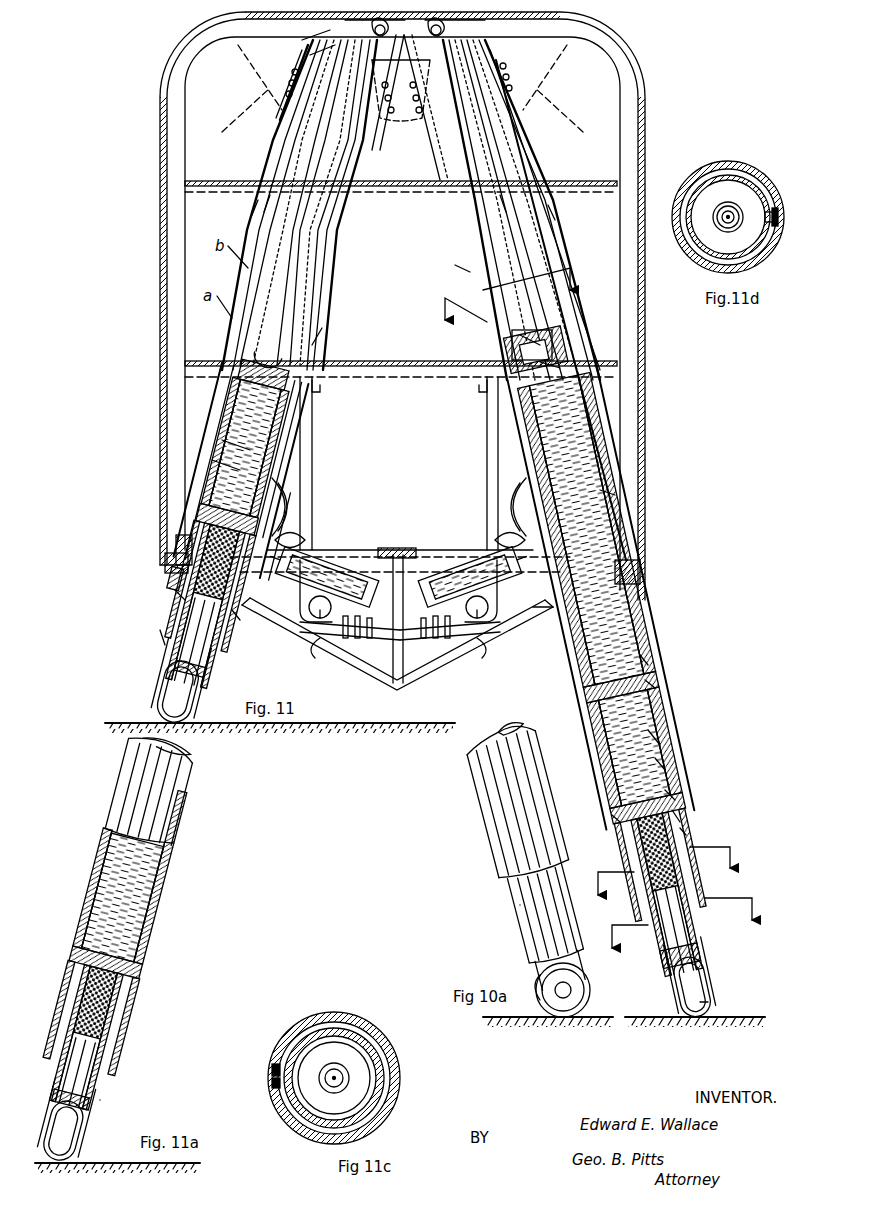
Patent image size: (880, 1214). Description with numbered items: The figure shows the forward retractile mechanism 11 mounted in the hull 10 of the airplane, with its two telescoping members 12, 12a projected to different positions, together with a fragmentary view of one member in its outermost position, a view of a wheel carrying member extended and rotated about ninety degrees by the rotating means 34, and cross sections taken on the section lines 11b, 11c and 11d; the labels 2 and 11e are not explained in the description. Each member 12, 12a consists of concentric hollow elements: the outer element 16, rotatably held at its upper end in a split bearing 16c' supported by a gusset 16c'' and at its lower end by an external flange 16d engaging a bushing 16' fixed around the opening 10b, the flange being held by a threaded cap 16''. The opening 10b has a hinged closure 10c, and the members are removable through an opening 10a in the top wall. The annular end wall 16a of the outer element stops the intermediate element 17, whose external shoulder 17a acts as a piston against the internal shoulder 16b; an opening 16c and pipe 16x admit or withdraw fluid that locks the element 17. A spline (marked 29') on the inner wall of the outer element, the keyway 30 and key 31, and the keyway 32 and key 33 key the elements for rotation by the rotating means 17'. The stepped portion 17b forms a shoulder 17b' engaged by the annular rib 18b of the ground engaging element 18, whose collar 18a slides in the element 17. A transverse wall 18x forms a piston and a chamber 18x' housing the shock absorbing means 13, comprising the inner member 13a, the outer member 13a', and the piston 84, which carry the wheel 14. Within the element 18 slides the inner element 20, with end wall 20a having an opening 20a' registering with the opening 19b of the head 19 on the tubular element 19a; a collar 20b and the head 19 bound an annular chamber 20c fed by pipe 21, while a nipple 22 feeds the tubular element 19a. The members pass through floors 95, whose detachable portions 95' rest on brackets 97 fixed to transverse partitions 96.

In FIG. 11, the body frame 2 is at (640, 300).
In FIG. 11, the hull 10 is at (470, 652).
In FIG. 11, the opening in top wall of hull 10a is at (175, 590).
In FIG. 11, the opening 10b is at (232, 610).
In FIG. 11, the hinged closure 10c is at (160, 630).
In FIG. 11, the retractile mechanism 11 is at (420, 543).
In FIG. 11, the section line 11b— 11b is at (522, 306).
In FIG. 11, the section line 11c— 11c is at (677, 884).
In FIG. 11, the section line 11d— 11d is at (691, 935).
In FIG. 11, the section line / actuator 11e is at (163, 462).
In FIG. 11, the retractile member 12 is at (360, 271).
In FIG. 11, the retractile member 12a is at (455, 269).
In FIG. 11, the shock-absorbing means 13 is at (718, 886).
In FIG. 11A, the shock-absorbing means 13 is at (142, 1069).
In FIG. 11D, the shock-absorbing means 13 is at (756, 241).
In FIG. 11C, the inner hollow member 13a is at (356, 1054).
In FIG. 11D, the inner hollow member 13a is at (728, 192).
In FIG. 11D, the hollow outer member 13a' is at (757, 199).
In FIG. 11, the wheel 14 is at (708, 1002).
In FIG. 10A, the wheel 14 is at (592, 992).
In FIG. 11, the outer element 16 is at (406, 388).
In FIG. 11, the bushing 16' is at (541, 632).
In FIG. 11, the cap 16'' is at (389, 564).
In FIG. 11, the annular end wall 16a is at (302, 40).
In FIG. 11, the internal annular shoulder 16b is at (176, 548).
In FIG. 11, the opening 16c is at (400, 545).
In FIG. 11, the split bearing 16c' is at (274, 87).
In FIG. 11, the gusset 16c'' is at (264, 84).
In FIG. 11, the external flange 16d is at (172, 568).
In FIG. 11, the supply and discharge pipe 16x is at (290, 512).
In FIG. 11, the intermediate element 17 is at (343, 388).
In FIG. 11A, the intermediate element 17 is at (133, 855).
In FIG. 10A, the intermediate element 17 is at (513, 799).
In FIG. 11C, the intermediate element 17 is at (334, 1058).
In FIG. 11, the rotating means 17' is at (400, 606).
In FIG. 11, the external annular shoulder 17a is at (310, 55).
In FIG. 11, the stepped portion 17b is at (692, 779).
In FIG. 11, the shoulder 17b' is at (418, 597).
In FIG. 11, the ground engaging element 18 is at (672, 810).
In FIG. 11A, the ground engaging element 18 is at (130, 1040).
In FIG. 10A, the ground engaging element 18 is at (512, 930).
In FIG. 11C, the ground engaging element 18 is at (322, 1033).
In FIG. 11, the collar 18a is at (615, 495).
In FIG. 11, the annular rib 18b is at (222, 440).
In FIG. 11, the transverse wall 18x is at (590, 806).
In FIG. 11, the chamber 18x' is at (704, 822).
In FIG. 11, the head 19 is at (560, 368).
In FIG. 11, the tubular element 19a is at (500, 178).
In FIG. 11, the through opening 19b is at (640, 395).
In FIG. 11, the element 20 is at (615, 400).
In FIG. 11, the end wall 20a is at (670, 644).
In FIG. 11, the through opening 20a' is at (677, 671).
In FIG. 11, the collar 20b is at (540, 345).
In FIG. 11, the annular chamber 20c is at (322, 328).
In FIG. 11, the supply and discharge pipe 21 is at (270, 195).
In FIG. 11, the nipple 22 is at (419, 47).
In FIG. 11, the member 29' is at (441, 282).
In FIG. 11C, the keyway 30 is at (272, 1062).
In FIG. 11C, the key 31 is at (272, 1086).
In FIG. 11D, the keyway 32 is at (778, 210).
In FIG. 11D, the key 33 is at (776, 224).
In FIG. 10A, the rotating means 34 is at (497, 911).
In FIG. 11C, the piston 84 is at (343, 1072).
In FIG. 11, the floors 95 is at (401, 164).
In FIG. 11, the detachable floor portions 95' is at (401, 283).
In FIG. 11, the transverse partitions 96 is at (306, 463).
In FIG. 11, the brackets 97 is at (480, 400).